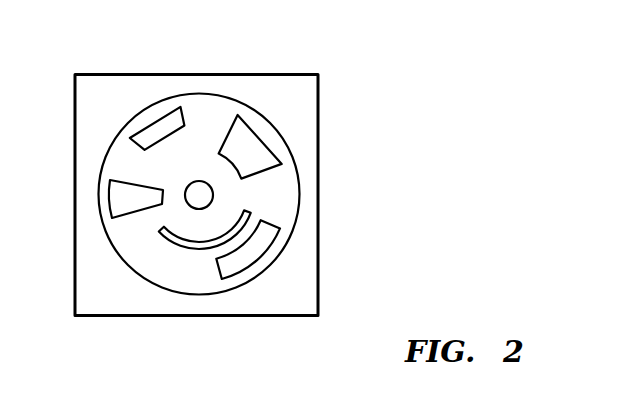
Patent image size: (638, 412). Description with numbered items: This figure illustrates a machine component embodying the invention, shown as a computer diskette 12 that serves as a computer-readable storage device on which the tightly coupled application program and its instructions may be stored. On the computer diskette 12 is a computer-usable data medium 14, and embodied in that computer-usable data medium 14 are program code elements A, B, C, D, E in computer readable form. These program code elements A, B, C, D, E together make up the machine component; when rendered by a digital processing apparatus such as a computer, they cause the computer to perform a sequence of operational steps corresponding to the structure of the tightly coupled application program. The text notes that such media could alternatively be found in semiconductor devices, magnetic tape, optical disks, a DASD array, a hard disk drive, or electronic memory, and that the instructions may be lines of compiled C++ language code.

The computer diskette 12 is at (320, 160).
The computer-usable data medium 14 is at (287, 208).
The program code element A is at (258, 147).
The program code element B is at (157, 127).
The program code element C is at (118, 198).
The program code element D is at (183, 247).
The program code element E is at (253, 252).